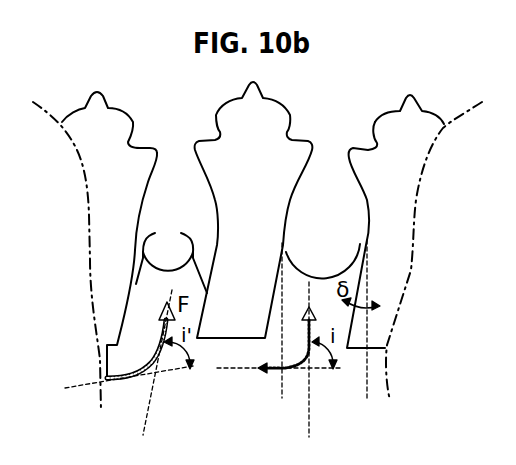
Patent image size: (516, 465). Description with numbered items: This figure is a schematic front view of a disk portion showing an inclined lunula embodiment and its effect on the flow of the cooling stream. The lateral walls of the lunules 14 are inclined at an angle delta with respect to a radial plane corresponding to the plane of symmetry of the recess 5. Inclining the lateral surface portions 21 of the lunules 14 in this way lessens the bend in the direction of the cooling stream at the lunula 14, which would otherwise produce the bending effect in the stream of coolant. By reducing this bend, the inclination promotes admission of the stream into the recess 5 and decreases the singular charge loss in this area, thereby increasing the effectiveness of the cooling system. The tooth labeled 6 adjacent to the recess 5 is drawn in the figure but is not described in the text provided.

The recess 5 is at (330, 250).
The second tooth 6 is at (262, 138).
The lunula 14 is at (147, 316).
The lateral surface portion 21 is at (171, 254).